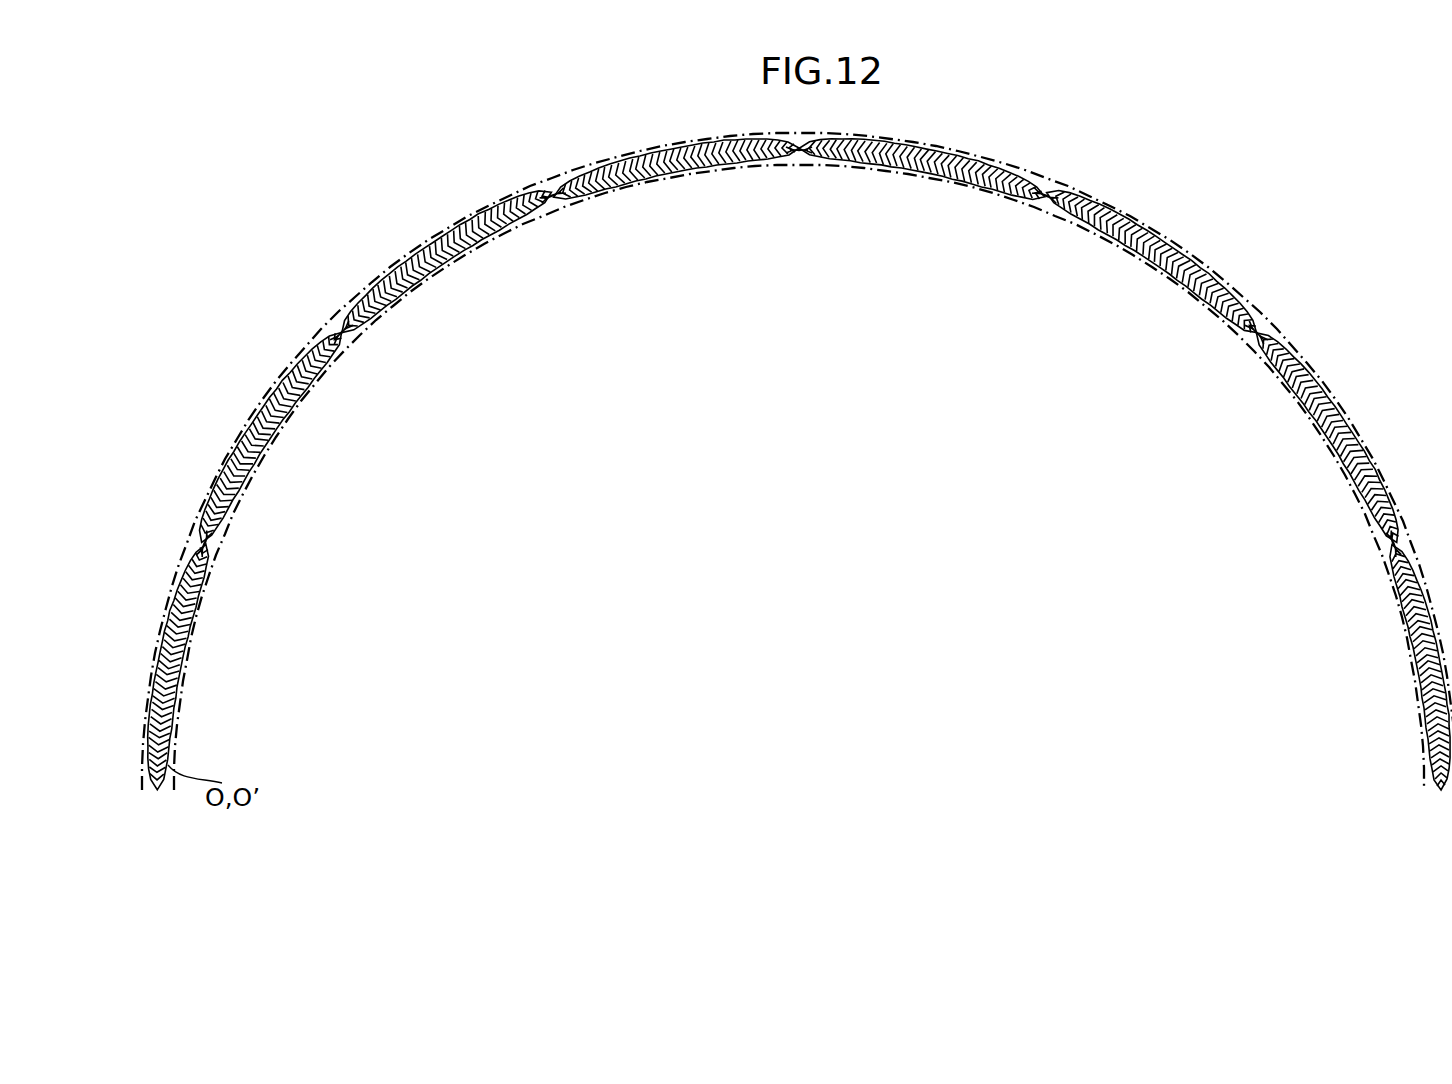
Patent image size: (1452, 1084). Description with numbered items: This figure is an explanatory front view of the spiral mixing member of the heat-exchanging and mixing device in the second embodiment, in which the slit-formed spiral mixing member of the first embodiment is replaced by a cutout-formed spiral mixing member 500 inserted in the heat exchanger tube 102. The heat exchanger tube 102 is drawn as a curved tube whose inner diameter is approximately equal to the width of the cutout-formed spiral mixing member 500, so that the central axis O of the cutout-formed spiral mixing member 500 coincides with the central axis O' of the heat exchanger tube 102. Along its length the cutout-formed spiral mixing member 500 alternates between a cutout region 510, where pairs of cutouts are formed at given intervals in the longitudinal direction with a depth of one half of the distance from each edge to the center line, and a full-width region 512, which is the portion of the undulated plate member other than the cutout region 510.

The cutout-formed spiral mixing member 500 is at (934, 150).
The heat exchanger tube 102 is at (666, 176).
The cutout region 510 is at (822, 177).
The full-width region 512 is at (1005, 215).